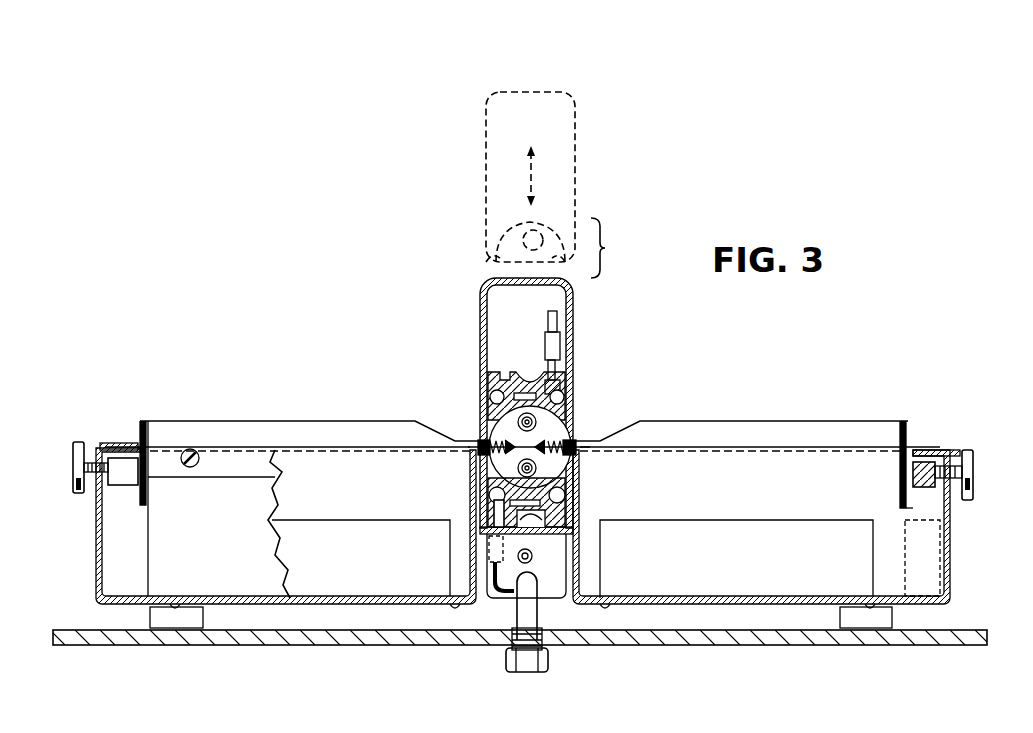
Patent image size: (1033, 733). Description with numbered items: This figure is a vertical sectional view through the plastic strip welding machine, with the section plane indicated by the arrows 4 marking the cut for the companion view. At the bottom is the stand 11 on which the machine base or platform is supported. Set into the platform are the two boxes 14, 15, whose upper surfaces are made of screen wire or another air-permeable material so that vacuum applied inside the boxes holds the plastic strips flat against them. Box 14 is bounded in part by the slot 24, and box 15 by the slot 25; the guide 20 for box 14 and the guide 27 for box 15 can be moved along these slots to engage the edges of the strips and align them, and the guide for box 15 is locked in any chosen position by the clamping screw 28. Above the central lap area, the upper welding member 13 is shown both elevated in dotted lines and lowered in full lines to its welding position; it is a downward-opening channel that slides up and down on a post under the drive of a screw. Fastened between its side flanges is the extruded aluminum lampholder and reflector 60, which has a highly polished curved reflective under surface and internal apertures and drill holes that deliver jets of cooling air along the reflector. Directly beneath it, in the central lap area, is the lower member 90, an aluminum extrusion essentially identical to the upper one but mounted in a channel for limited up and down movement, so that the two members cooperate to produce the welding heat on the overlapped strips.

The section line 4- 4 is at (527, 45).
The stand 11 is at (972, 634).
The upper welding member 13 is at (582, 141).
The box 14 is at (761, 537).
The box 15 is at (286, 524).
The guide 20 is at (782, 426).
The slot 24 is at (913, 452).
The slot 25 is at (136, 446).
The guide 27 is at (225, 430).
The clamping screw 28 is at (70, 464).
The lampholder and reflector 60 is at (573, 422).
The lower member 90 is at (578, 477).